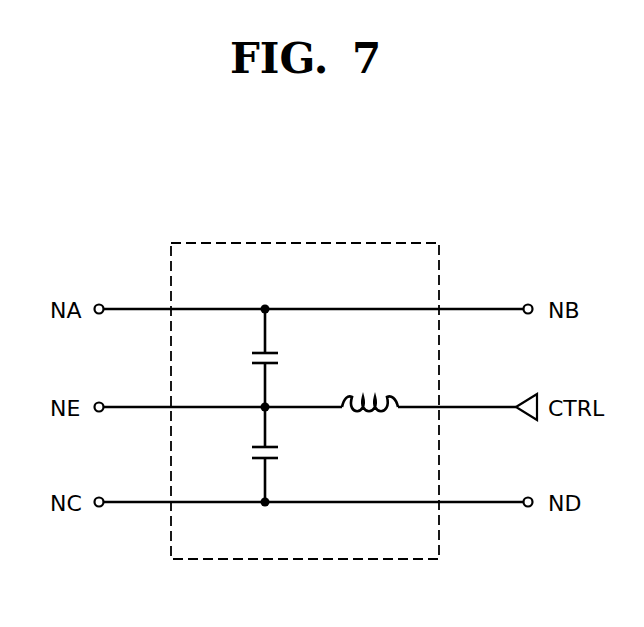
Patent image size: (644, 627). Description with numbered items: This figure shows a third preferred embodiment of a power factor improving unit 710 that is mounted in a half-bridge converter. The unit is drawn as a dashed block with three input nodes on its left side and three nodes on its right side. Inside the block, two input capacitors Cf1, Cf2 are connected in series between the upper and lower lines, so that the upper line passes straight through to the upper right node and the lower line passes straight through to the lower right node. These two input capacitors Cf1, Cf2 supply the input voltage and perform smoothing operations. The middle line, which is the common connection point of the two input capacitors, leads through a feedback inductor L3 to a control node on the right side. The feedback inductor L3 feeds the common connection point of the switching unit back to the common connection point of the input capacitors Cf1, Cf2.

The power factor improving unit 710 is at (314, 243).
The input capacitor Cf1 is at (241, 358).
The input capacitor Cf2 is at (241, 454).
The feedback inductor L3 is at (370, 423).